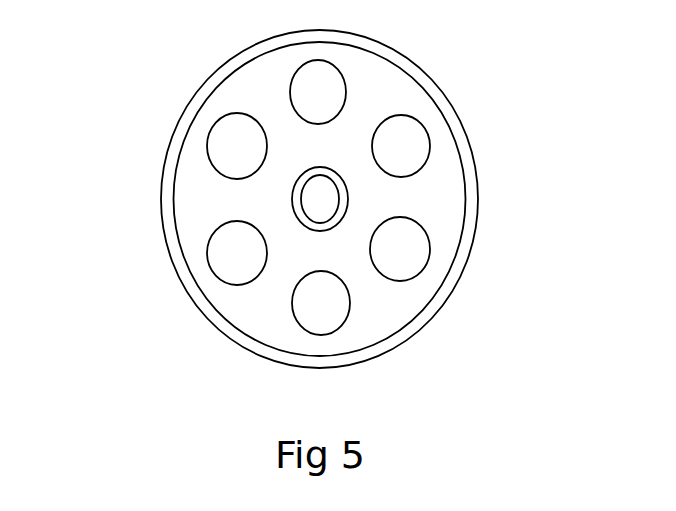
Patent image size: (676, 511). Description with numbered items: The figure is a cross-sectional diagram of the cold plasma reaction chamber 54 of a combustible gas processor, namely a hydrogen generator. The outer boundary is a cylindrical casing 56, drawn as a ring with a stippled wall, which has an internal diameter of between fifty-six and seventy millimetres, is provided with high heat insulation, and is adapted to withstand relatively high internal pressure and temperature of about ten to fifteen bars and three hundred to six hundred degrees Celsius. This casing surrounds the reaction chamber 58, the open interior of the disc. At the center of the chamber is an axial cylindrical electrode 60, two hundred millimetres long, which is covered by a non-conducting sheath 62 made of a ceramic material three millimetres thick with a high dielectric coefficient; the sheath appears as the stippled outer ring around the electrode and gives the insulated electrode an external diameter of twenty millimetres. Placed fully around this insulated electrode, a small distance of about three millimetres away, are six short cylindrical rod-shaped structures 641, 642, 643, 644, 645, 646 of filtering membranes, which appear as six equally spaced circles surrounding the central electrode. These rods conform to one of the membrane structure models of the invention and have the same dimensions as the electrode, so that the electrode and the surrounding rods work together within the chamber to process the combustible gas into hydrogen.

The cold plasma reaction chamber 54 is at (85, 42).
The cylindrical casing 56 is at (411, 60).
The reaction chamber 58 is at (438, 193).
The axial cylindrical electrode 60 is at (317, 197).
The non-conducting sheath 62 is at (307, 225).
The short cylindrical rod-shaped structure 641 is at (405, 140).
The short cylindrical rod-shaped structure 642 is at (407, 250).
The short cylindrical rod-shaped structure 643 is at (320, 310).
The short cylindrical rod-shaped structure 644 is at (238, 255).
The short cylindrical rod-shaped structure 645 is at (238, 137).
The short cylindrical rod-shaped structure 646 is at (318, 93).